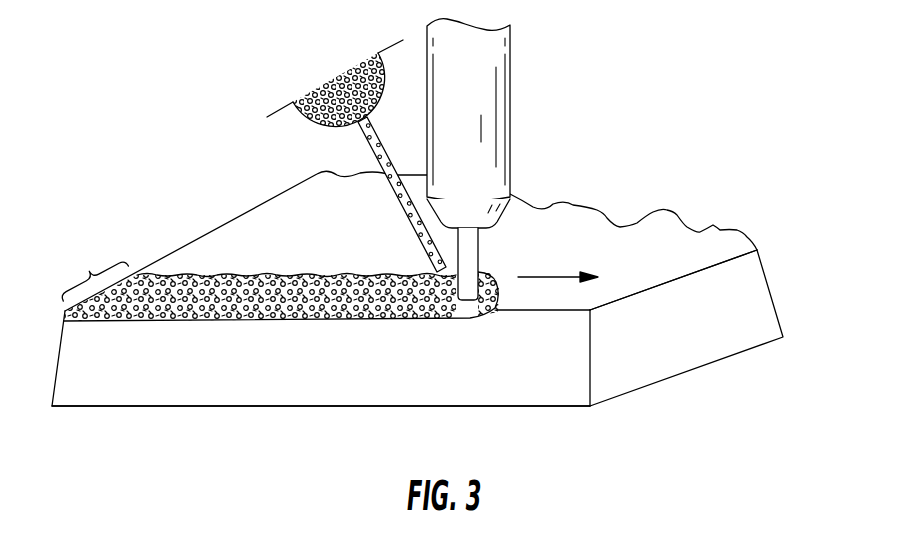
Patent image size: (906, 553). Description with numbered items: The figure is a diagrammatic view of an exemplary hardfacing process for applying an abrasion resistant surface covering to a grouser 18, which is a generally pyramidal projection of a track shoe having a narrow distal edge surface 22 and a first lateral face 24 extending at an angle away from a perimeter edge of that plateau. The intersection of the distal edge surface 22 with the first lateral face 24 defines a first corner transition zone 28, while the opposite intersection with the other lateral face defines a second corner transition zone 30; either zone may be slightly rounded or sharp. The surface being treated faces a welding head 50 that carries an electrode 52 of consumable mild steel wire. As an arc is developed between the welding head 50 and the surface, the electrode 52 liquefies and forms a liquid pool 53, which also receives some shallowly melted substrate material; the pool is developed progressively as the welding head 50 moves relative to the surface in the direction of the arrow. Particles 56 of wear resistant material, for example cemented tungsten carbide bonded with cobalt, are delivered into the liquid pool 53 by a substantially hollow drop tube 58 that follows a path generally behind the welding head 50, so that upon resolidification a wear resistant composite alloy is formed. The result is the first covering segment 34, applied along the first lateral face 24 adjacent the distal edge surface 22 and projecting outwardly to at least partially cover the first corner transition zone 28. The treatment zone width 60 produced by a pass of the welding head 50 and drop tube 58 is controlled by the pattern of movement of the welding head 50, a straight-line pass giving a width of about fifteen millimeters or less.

The grouser 18 is at (417, 327).
The distal edge surface 22 is at (326, 381).
The first lateral face 24 is at (305, 235).
The first corner transition zone 28 is at (560, 310).
The second corner transition zone 30 is at (520, 406).
The first covering segment 34 is at (168, 285).
The welding head 50 is at (510, 112).
The electrode 52 is at (480, 253).
The liquid pool 53 is at (497, 278).
The particles 56 is at (343, 73).
The drop tube 58 is at (393, 188).
The treatment zone width 60 is at (93, 268).